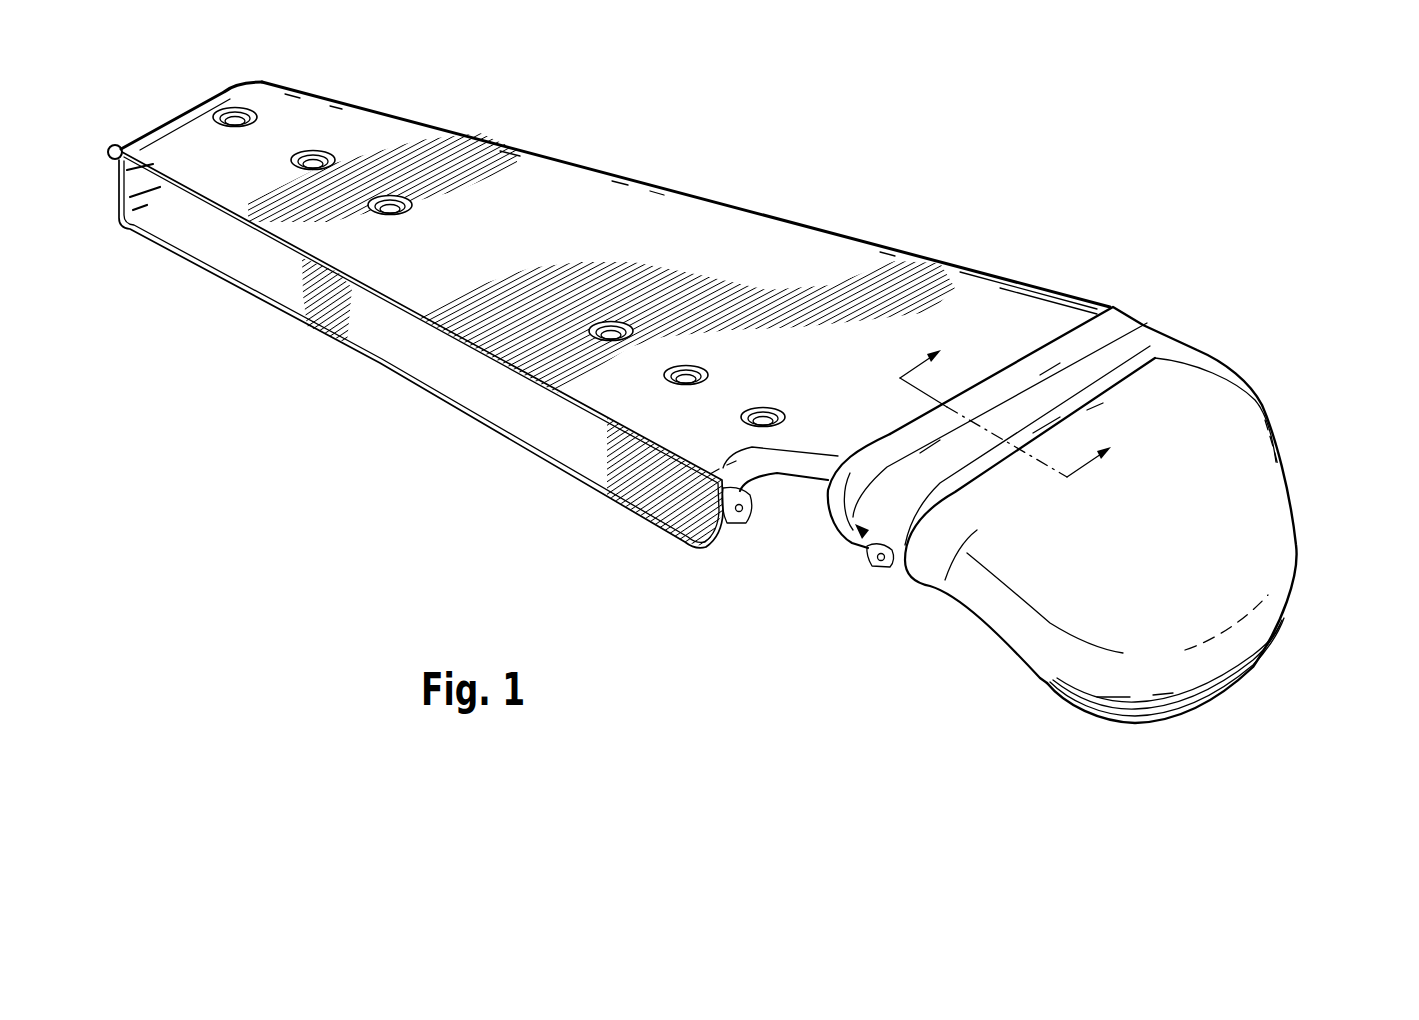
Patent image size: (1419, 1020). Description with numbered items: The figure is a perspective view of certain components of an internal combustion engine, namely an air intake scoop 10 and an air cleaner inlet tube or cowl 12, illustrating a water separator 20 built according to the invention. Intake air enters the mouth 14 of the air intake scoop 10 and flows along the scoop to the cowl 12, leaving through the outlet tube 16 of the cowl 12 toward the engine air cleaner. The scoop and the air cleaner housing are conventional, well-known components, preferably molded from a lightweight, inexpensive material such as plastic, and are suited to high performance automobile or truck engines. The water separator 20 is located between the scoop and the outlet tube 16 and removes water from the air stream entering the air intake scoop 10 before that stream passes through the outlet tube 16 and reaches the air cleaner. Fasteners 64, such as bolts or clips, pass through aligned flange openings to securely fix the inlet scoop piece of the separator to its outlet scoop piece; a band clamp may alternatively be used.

The air intake scoop 10 is at (819, 170).
The air cleaner inlet tube or cowl 12 is at (1308, 468).
The mouth 14 is at (413, 357).
The outlet tube 16 is at (1130, 727).
The water separator 20 is at (860, 546).
The fasteners 64 is at (1188, 348).